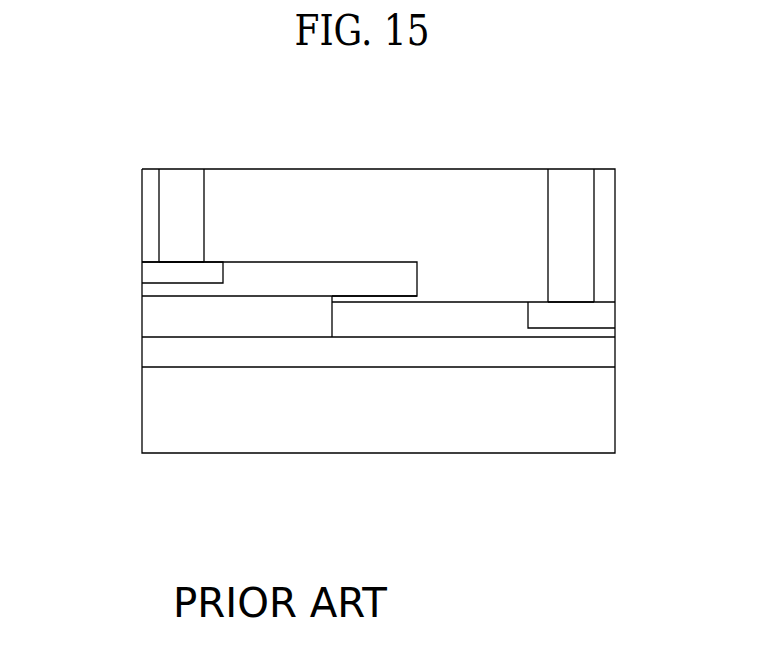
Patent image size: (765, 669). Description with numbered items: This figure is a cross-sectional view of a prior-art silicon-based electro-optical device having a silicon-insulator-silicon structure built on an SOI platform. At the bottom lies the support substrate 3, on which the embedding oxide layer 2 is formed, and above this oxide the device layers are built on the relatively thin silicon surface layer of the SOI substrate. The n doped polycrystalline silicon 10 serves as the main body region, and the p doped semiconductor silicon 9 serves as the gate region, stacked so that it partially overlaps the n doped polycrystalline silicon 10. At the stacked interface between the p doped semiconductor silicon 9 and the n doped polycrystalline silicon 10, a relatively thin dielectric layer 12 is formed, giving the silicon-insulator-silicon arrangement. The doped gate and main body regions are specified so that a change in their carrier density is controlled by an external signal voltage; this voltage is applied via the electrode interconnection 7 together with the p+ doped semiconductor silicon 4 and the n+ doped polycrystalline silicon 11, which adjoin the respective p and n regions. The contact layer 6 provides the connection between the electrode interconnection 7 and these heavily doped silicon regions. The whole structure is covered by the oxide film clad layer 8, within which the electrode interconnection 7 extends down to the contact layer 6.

The embedding oxide layer 2 is at (592, 348).
The support substrate 3 is at (445, 428).
The P+ doped semiconductor silicon 4 is at (592, 312).
The contact layer 6 is at (572, 298).
The electrode interconnection 7 is at (555, 212).
The oxide film clad layer 8 is at (223, 192).
The P doped semiconductor silicon 9 is at (503, 323).
The N doped polycrystalline silicon 10 is at (258, 289).
The N+ doped polycrystalline silicon 11 is at (165, 272).
The dielectric layer 12 is at (360, 303).